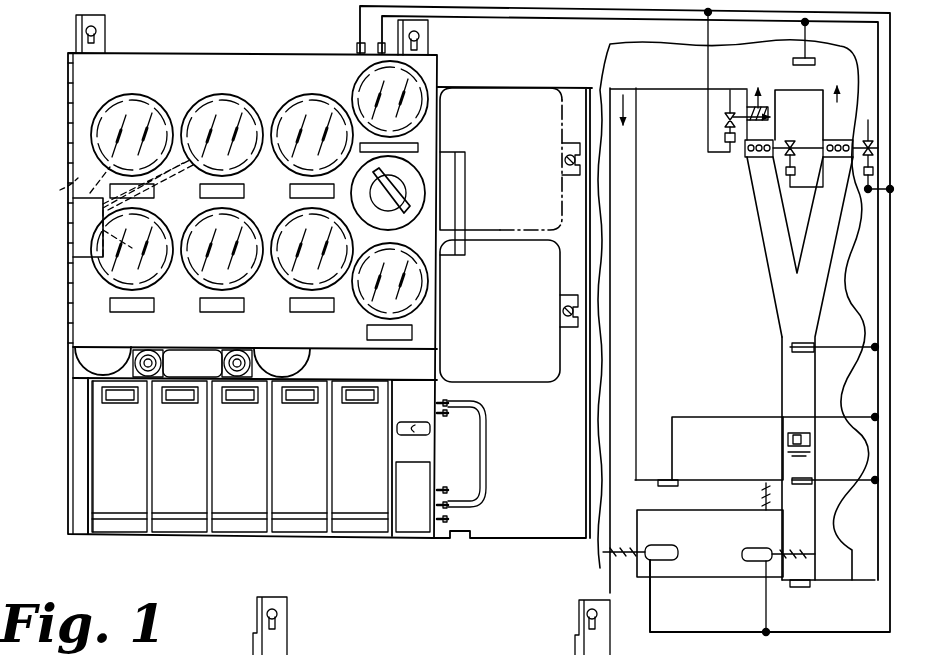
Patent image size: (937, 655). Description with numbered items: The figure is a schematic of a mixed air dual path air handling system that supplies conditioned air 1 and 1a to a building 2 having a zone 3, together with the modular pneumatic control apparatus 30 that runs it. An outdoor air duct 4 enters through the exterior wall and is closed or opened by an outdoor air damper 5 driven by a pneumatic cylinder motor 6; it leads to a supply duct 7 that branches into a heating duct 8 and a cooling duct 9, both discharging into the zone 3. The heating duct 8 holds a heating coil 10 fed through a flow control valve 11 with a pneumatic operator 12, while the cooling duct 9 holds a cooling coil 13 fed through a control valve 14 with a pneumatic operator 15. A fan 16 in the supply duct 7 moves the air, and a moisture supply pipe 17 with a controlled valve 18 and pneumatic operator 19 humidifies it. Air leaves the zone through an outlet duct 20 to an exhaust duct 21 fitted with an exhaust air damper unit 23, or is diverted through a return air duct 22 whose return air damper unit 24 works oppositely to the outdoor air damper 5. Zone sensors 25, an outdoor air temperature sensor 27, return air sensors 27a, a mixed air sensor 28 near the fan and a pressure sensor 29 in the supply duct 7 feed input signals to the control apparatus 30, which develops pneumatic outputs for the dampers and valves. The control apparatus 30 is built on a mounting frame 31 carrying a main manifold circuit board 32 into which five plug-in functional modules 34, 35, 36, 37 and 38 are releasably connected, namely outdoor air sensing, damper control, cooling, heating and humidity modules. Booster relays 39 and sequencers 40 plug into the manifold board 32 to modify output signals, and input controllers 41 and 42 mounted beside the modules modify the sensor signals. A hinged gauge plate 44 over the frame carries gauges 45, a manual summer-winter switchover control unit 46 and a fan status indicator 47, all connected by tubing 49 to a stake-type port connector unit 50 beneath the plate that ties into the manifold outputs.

The conditioned air 1 is at (746, 108).
The conditioned air 1a is at (840, 82).
The building 2 is at (604, 40).
The zone 3 is at (697, 88).
The outdoor air duct 4 is at (765, 590).
The outdoor air damper 5 is at (806, 551).
The pneumatic cylinder motor 6 is at (745, 549).
The supply duct 7 is at (780, 340).
The heating duct 8 is at (748, 212).
The cooling duct 9 is at (832, 286).
The heating coil 10 is at (757, 180).
The flow control valve 11 is at (799, 153).
The pneumatic operator 12 is at (795, 172).
The cooling coil 13 is at (832, 134).
The control valve 14 is at (866, 138).
The pneumatic operator 15 is at (858, 190).
The fan 16 is at (811, 446).
The moisture supply pipe 17 is at (777, 92).
The controlled valve 18 is at (724, 114).
The pneumatic operator 19 is at (733, 144).
The outlet duct 20 is at (637, 172).
The exhaust duct 21 is at (610, 568).
The return air duct 22 is at (762, 458).
The exhaust air damper unit 23 is at (608, 547).
The return air damper unit 24 is at (755, 522).
The sensor 25 is at (793, 66).
The outdoor air temperature sensor 27 is at (800, 590).
The return air sensor 27a is at (678, 486).
The mixed air sensor 28 is at (810, 486).
The pressure sensor 29 is at (803, 341).
The pneumatic control apparatus 30 is at (66, 463).
The mounting frame 31 is at (86, 533).
The main manifold circuit board 32 is at (95, 373).
The outdoor air sensing module 34 is at (122, 510).
The outdoor and return air damper control module 35 is at (182, 510).
The cooling control module 36 is at (242, 510).
The heating control module 37 is at (300, 510).
The humidity and auxiliary signal control module 38 is at (358, 510).
The modifying plug-in unit 39 is at (115, 357).
The plug-in sequencer unit 40 is at (224, 365).
The input controller 41 is at (524, 197).
The input controller 42 is at (516, 357).
The gauge plate 44 is at (80, 285).
The gauge 45 is at (277, 104).
The manual summer-winter switchover control unit 46 is at (410, 168).
The fan status indicator 47 is at (420, 291).
The tubing 49 is at (78, 173).
The stake-type port connector unit 50 is at (63, 197).